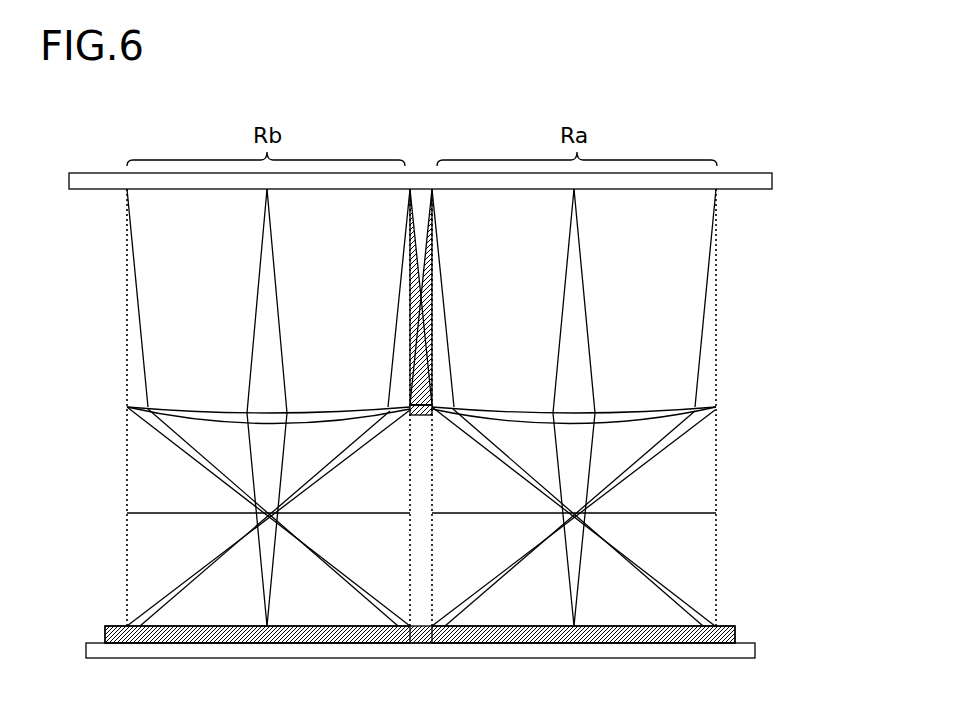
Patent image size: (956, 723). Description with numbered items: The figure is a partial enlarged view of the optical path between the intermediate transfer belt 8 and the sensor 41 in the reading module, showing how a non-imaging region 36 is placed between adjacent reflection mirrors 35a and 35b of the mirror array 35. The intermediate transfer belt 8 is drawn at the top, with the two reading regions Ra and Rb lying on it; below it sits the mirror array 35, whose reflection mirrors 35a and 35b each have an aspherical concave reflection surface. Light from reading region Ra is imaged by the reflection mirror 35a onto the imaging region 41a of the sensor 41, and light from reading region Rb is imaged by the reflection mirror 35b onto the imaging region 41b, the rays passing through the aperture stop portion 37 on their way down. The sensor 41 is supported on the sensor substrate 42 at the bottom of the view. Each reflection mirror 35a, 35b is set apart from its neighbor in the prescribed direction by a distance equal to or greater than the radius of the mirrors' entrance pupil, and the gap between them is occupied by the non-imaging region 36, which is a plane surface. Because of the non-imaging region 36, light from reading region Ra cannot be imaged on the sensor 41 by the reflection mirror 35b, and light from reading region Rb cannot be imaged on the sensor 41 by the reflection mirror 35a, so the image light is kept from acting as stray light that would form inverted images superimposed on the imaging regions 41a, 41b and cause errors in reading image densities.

The intermediate transfer belt 8 is at (752, 174).
The mirror array 35 is at (466, 385).
The reflection mirror 35a is at (475, 407).
The reflection mirror 35b is at (370, 407).
The non-imaging region 36 is at (432, 418).
The aperture stop portion 37 is at (248, 520).
The sensor 41 is at (723, 625).
The imaging region 41a is at (715, 667).
The imaging region 41b is at (410, 667).
The sensor substrate 42 is at (757, 652).